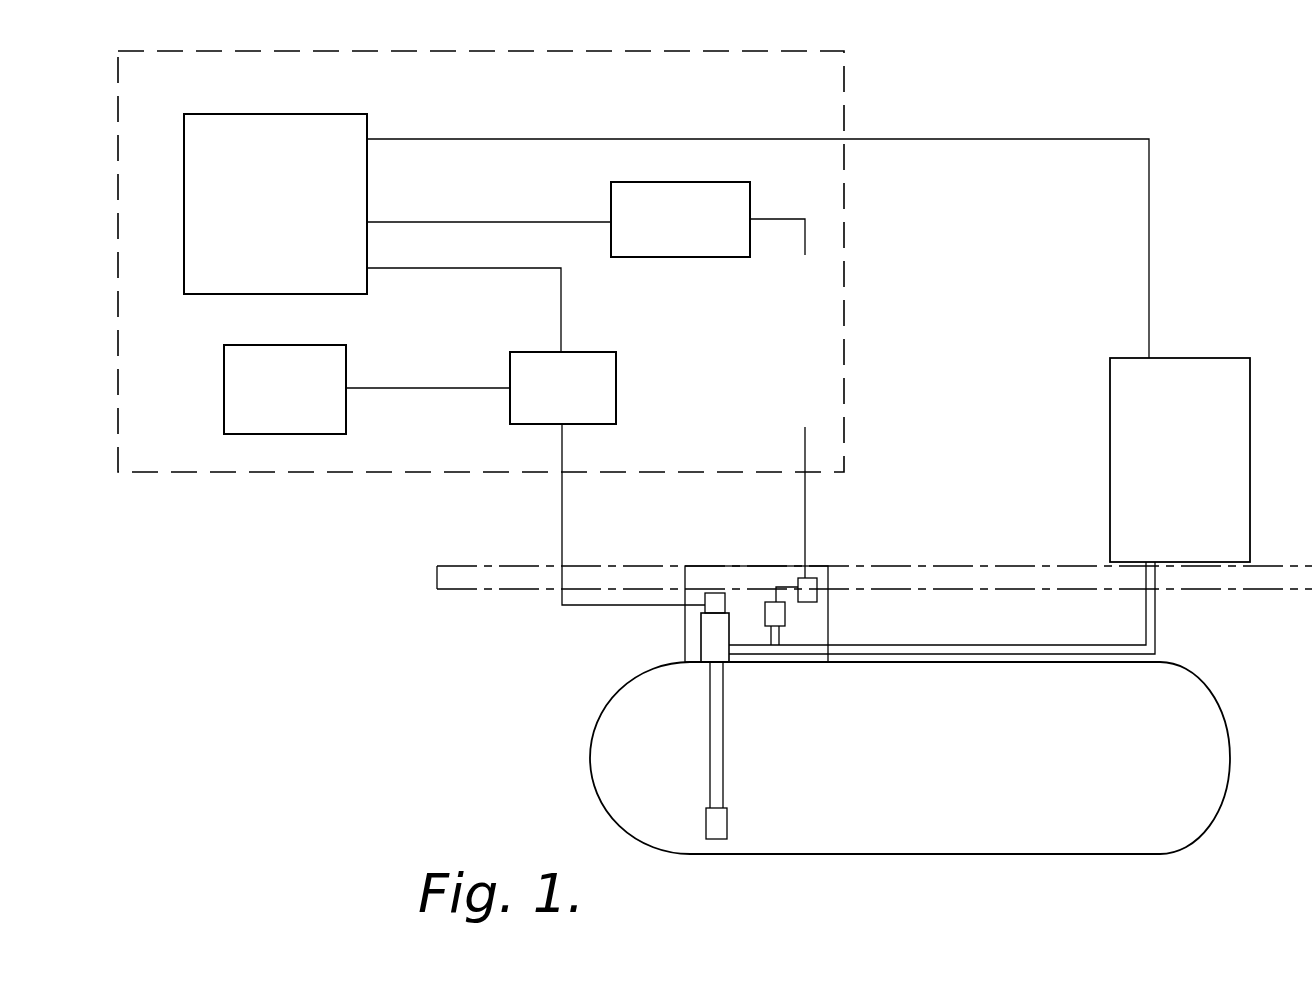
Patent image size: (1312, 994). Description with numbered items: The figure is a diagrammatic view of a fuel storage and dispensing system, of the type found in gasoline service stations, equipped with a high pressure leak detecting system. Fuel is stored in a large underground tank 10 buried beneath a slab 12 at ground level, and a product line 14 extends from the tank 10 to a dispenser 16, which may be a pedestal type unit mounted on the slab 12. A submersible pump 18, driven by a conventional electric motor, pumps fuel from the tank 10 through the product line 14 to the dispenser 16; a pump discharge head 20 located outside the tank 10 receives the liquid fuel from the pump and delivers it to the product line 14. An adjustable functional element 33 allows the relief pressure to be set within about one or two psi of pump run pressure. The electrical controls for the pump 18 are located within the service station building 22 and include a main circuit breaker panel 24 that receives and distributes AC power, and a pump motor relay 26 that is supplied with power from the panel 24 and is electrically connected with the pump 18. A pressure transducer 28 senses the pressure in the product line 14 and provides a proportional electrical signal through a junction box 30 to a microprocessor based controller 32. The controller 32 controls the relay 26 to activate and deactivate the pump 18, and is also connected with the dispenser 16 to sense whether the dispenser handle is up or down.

The underground tank 10 is at (1185, 693).
The slab 12 is at (931, 568).
The product line 14 is at (945, 647).
The dispenser 16 is at (1240, 408).
The submersible pump 18 is at (718, 822).
The pump discharge head 20 is at (716, 632).
The service station building 22 is at (845, 338).
The main circuit breaker panel 24 is at (333, 366).
The pump motor relay 26 is at (604, 376).
The pressure transducer 28 is at (765, 604).
The junction box 30 is at (740, 196).
The controller 32 is at (345, 130).
The adjustable functional element 33 is at (718, 603).